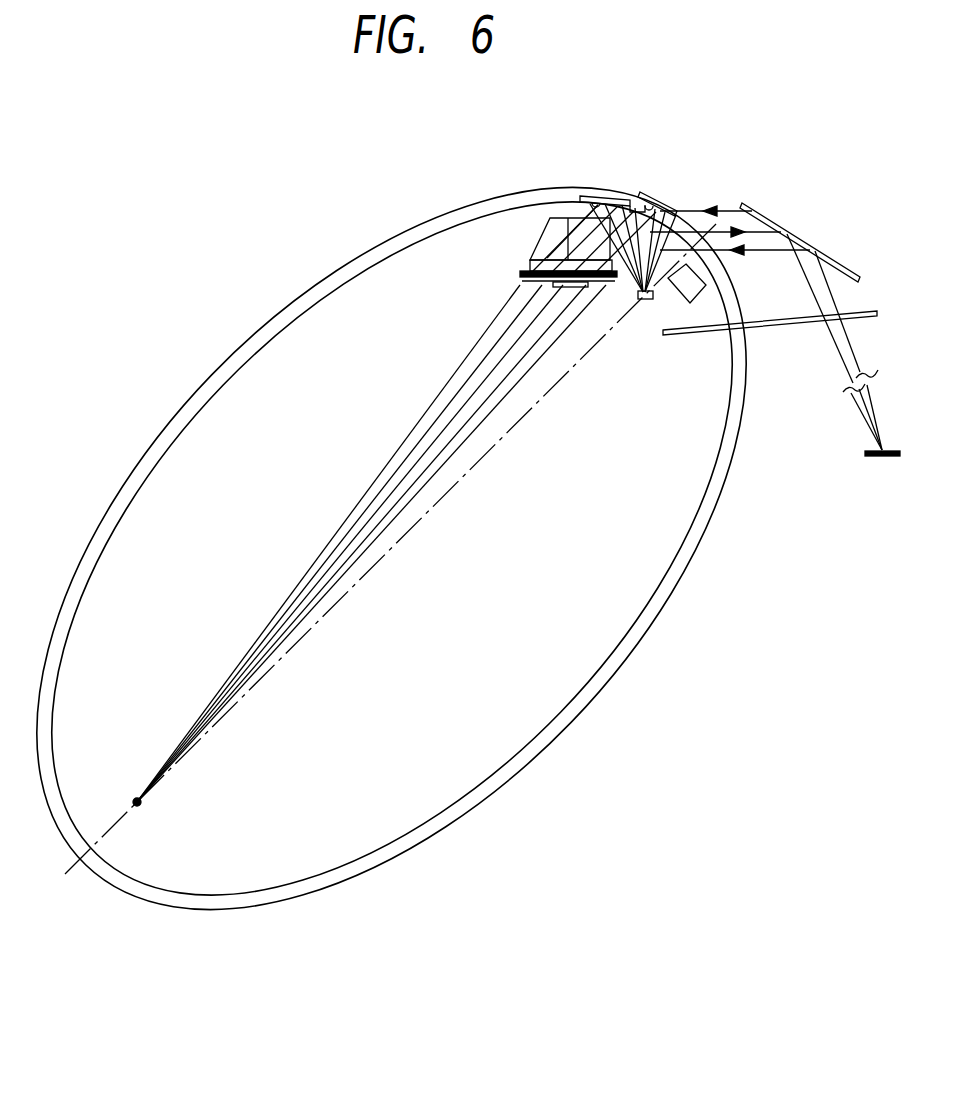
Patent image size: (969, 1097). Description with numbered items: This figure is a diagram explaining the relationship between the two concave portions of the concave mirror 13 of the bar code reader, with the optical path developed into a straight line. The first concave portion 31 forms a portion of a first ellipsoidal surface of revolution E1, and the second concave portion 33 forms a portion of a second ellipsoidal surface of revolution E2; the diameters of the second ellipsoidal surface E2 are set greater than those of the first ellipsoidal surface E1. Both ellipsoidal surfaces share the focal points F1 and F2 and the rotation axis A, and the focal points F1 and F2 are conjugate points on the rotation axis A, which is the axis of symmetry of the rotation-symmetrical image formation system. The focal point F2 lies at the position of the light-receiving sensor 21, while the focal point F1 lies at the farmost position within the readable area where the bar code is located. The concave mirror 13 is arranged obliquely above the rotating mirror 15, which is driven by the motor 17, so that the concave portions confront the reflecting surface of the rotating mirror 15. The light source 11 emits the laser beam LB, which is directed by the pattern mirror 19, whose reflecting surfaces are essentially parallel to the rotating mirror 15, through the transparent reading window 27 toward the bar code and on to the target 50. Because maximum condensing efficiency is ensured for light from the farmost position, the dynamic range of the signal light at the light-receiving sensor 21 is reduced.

The light source 11 is at (699, 290).
The concave mirror 13 is at (673, 195).
The rotating mirror 15 is at (530, 258).
The motor 17 is at (518, 271).
The pattern mirror 19 is at (746, 207).
The light-receiving sensor 21 is at (640, 300).
The transparent reading window 27 is at (913, 265).
The first concave portion 31 is at (597, 200).
The second concave portion 33 is at (646, 205).
The light receiving target 50 is at (892, 450).
The rotation axis A is at (391, 548).
The first ellipsoidal surface of revolution E1 is at (438, 548).
The second ellipsoidal surface of revolution E2 is at (428, 549).
The focal point F1 is at (171, 819).
The focal point F2 is at (672, 336).
The laser beam LB is at (830, 354).